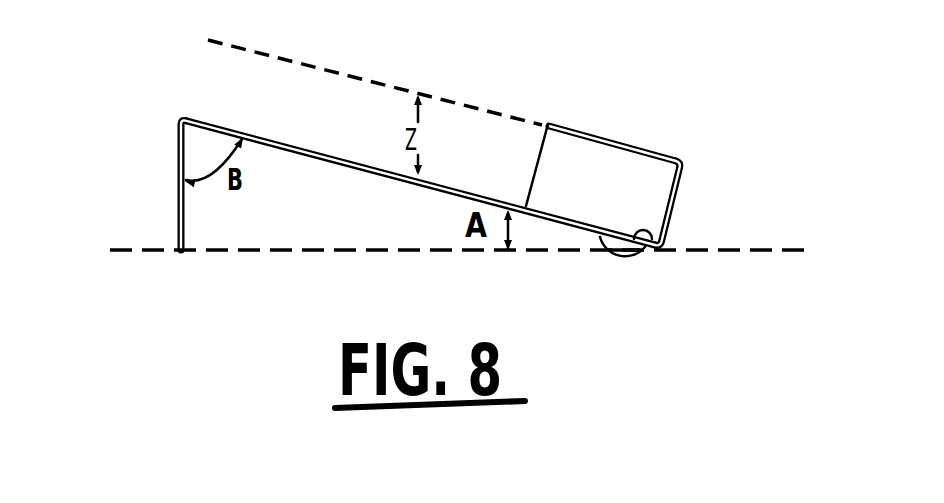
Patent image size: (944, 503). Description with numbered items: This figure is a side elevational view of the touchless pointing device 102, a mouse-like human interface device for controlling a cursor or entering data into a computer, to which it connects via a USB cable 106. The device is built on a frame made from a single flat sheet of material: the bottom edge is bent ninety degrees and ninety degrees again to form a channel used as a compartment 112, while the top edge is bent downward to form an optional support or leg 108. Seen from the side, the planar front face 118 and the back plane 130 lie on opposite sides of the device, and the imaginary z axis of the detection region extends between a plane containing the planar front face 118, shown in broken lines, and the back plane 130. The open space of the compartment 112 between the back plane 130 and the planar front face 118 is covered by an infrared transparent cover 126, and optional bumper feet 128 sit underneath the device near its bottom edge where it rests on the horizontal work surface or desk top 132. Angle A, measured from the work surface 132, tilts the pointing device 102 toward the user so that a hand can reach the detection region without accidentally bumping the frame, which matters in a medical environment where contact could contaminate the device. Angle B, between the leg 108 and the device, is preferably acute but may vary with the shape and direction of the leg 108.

The pointing device 102 is at (305, 131).
The USB cable 106 is at (648, 228).
The leg 108 is at (177, 193).
The compartment 112 is at (668, 158).
The planar front face 118 is at (595, 137).
The infrared transparent cover 126 is at (537, 160).
The bumper feet 128 is at (620, 257).
The back plane 130 is at (338, 163).
The work surface 132 is at (770, 249).